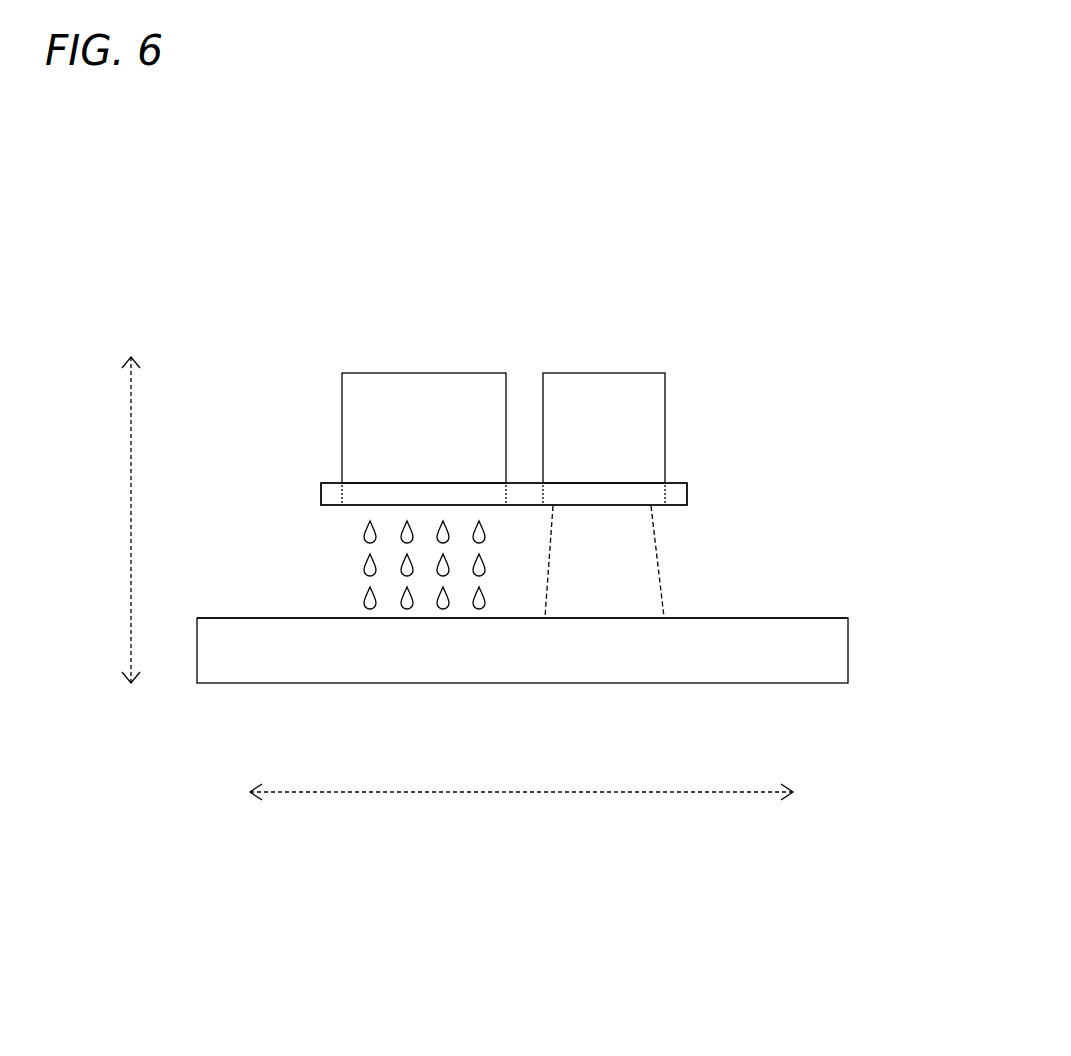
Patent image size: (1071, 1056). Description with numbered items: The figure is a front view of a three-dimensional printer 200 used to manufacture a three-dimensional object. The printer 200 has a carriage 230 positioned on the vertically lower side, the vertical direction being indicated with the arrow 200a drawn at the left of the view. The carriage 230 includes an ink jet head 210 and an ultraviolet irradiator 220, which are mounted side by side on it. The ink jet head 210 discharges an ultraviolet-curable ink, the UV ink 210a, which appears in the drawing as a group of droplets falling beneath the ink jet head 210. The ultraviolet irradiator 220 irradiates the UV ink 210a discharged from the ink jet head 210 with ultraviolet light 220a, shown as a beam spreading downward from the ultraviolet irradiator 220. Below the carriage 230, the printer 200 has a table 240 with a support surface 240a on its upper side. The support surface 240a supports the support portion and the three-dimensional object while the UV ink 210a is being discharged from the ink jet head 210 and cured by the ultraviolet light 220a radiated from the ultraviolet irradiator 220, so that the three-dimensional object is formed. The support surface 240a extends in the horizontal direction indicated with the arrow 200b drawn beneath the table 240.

The 3D printer 200 is at (580, 300).
The arrow indicating vertical direction 200a is at (131, 532).
The arrow indicating horizontal direction 200b is at (533, 793).
The ink jet head 210 is at (378, 395).
The UV ink 210a is at (367, 565).
The ultraviolet irradiator 220 is at (621, 395).
The ultraviolet light 220a is at (642, 567).
The carriage 230 is at (673, 493).
The table 240 is at (798, 650).
The support surface 240a is at (793, 618).